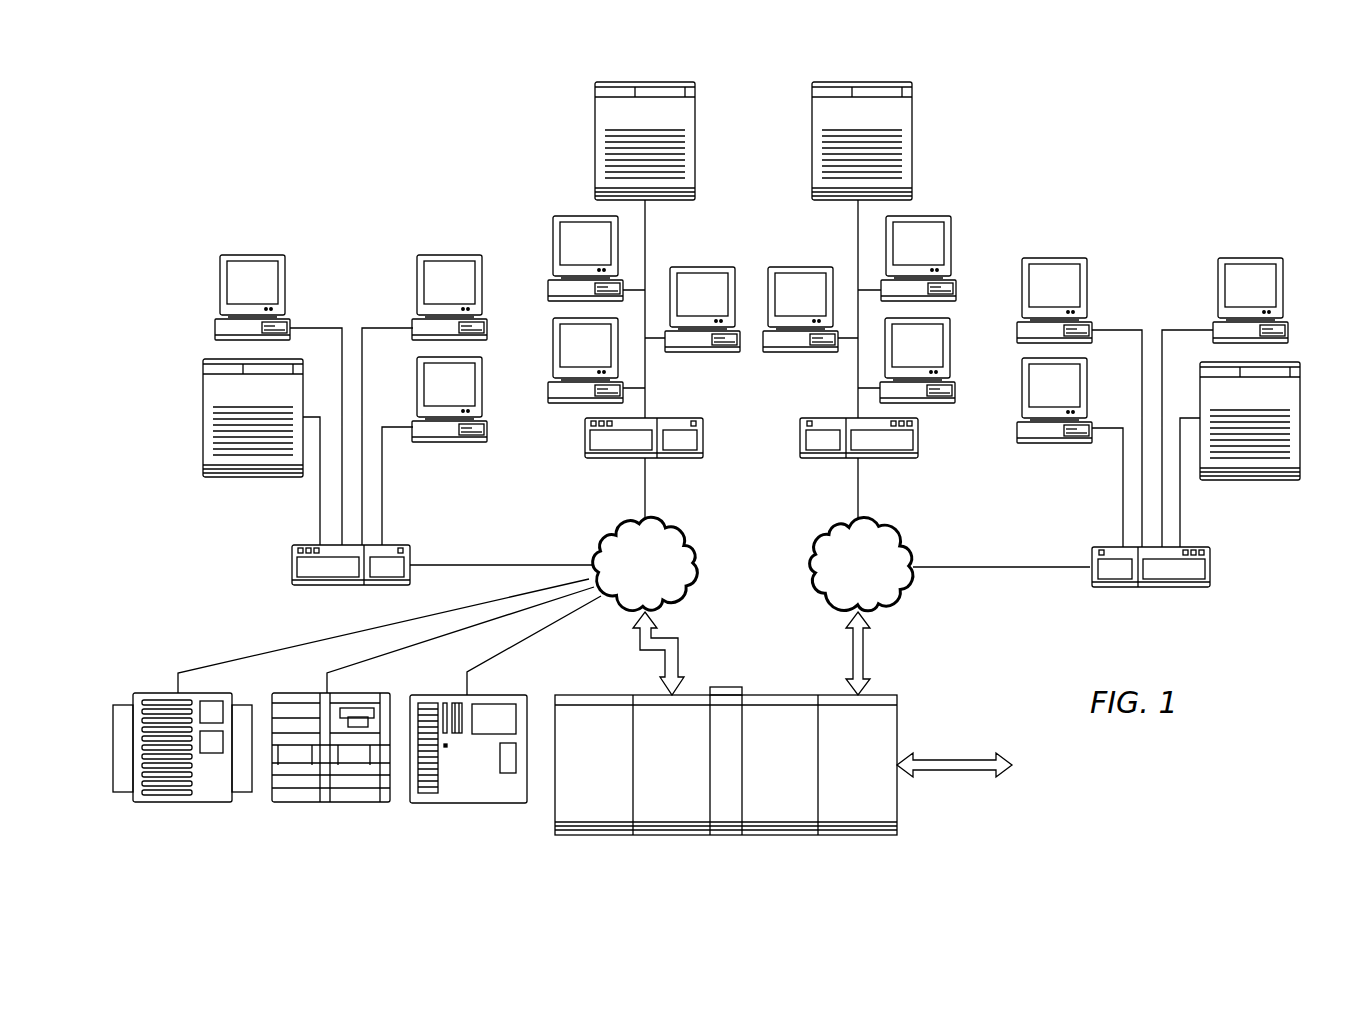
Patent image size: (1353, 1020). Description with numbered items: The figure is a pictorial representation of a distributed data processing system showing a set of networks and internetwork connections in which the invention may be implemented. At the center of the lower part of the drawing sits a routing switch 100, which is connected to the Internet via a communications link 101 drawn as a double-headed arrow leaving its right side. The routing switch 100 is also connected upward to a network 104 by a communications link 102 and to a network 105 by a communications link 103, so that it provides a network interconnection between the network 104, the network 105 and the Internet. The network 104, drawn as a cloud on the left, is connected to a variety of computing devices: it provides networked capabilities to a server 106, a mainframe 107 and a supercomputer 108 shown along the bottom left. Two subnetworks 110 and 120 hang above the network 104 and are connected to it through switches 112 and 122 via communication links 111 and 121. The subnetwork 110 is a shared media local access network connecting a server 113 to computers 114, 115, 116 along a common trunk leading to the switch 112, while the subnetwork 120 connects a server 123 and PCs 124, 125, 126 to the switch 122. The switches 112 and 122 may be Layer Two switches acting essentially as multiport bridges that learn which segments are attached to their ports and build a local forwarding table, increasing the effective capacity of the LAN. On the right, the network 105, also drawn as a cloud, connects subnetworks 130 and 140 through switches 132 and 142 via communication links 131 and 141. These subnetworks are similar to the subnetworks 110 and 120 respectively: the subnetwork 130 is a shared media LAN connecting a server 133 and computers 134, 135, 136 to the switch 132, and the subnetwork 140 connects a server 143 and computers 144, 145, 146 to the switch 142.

The routing switch 100 is at (897, 740).
The communications link 101 is at (955, 772).
The communications link 102 is at (631, 637).
The communications link 103 is at (848, 648).
The network 104 is at (688, 602).
The network 105 is at (902, 601).
The server 106 is at (182, 803).
The mainframe 107 is at (332, 803).
The supercomputer 108 is at (469, 803).
The subnetwork 110 is at (510, 189).
The communication link 111 is at (647, 487).
The switch 112 is at (621, 459).
The server 113 is at (595, 140).
The computer 114 is at (568, 254).
The computer 115 is at (568, 356).
The computer 116 is at (685, 305).
The subnetwork 120 is at (331, 241).
The communication link 121 is at (516, 564).
The switch 122 is at (292, 565).
The server 123 is at (250, 478).
The PC 124 is at (235, 293).
The PC 125 is at (432, 293).
The PC 126 is at (432, 395).
The subnetwork 130 is at (993, 189).
The communication link 131 is at (856, 488).
The switch 132 is at (876, 461).
The server 133 is at (910, 140).
The computer 134 is at (900, 356).
The computer 135 is at (901, 254).
The computer 136 is at (783, 305).
The subnetwork 140 is at (1172, 241).
The communication link 141 is at (1005, 566).
The switch 142 is at (1211, 572).
The server 143 is at (1252, 481).
The computer 144 is at (1233, 296).
The computer 145 is at (1037, 296).
The computer 146 is at (1037, 396).